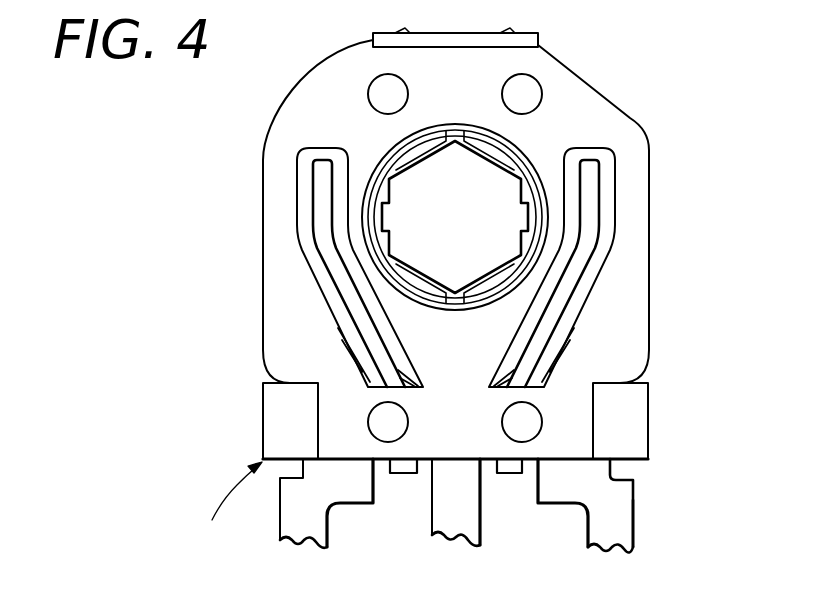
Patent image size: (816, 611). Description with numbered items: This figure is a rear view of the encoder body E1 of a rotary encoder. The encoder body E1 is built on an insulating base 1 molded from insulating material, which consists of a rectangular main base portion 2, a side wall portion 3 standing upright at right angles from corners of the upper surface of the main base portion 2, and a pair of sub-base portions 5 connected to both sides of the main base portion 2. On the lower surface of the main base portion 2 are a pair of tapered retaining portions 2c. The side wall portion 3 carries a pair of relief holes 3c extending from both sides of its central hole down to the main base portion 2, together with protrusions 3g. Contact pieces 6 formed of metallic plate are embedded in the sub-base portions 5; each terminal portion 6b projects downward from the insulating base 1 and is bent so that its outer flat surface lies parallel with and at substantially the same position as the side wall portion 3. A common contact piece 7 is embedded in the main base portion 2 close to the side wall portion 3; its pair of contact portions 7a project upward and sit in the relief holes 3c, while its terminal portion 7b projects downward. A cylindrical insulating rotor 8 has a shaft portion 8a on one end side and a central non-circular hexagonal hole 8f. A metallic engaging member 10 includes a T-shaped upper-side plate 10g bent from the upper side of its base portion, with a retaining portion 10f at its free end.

The insulating base 1 is at (234, 506).
The main base portion 2 is at (455, 506).
The retaining portions 2c is at (402, 473).
The side wall portion 3 is at (640, 303).
The relief holes 3c is at (341, 353).
The protrusions 3g is at (525, 90).
The sub-base portions 5 is at (270, 430).
The contact pieces 6 is at (633, 502).
The terminal portion 6b is at (625, 525).
The common contact piece 7 is at (310, 227).
The contact portions 7a is at (319, 170).
The terminal portion 7b is at (442, 535).
The rotor 8 is at (385, 152).
The shaft portion 8a is at (478, 135).
The hexagonal hole 8f is at (500, 167).
The engaging member 10 is at (676, 604).
The retaining portion 10f is at (466, 33).
The upper-side plate 10g is at (491, 604).
The encoder body E1 is at (262, 315).